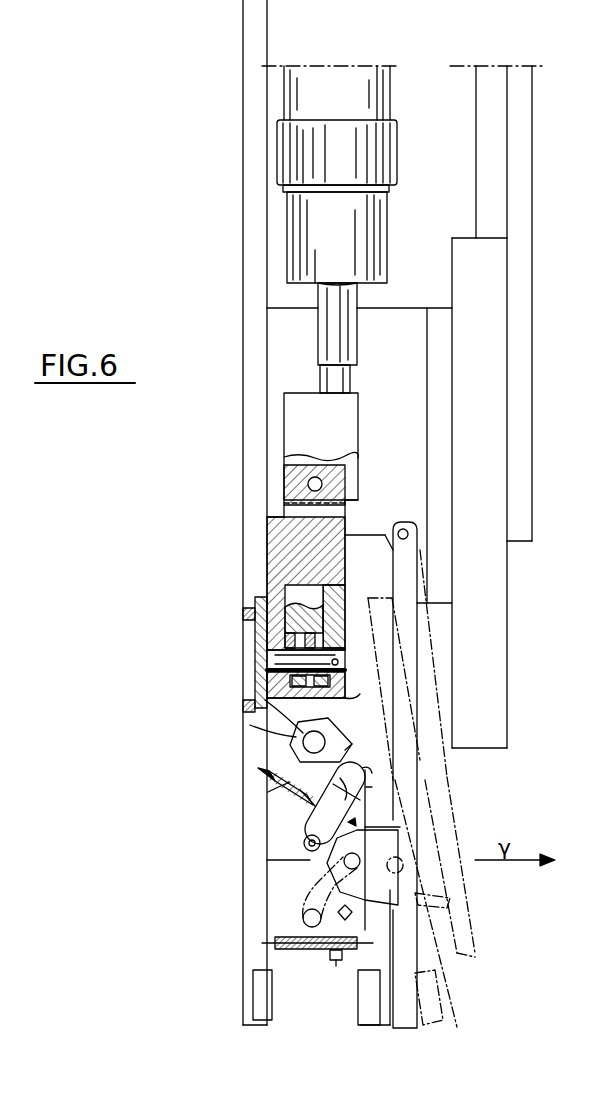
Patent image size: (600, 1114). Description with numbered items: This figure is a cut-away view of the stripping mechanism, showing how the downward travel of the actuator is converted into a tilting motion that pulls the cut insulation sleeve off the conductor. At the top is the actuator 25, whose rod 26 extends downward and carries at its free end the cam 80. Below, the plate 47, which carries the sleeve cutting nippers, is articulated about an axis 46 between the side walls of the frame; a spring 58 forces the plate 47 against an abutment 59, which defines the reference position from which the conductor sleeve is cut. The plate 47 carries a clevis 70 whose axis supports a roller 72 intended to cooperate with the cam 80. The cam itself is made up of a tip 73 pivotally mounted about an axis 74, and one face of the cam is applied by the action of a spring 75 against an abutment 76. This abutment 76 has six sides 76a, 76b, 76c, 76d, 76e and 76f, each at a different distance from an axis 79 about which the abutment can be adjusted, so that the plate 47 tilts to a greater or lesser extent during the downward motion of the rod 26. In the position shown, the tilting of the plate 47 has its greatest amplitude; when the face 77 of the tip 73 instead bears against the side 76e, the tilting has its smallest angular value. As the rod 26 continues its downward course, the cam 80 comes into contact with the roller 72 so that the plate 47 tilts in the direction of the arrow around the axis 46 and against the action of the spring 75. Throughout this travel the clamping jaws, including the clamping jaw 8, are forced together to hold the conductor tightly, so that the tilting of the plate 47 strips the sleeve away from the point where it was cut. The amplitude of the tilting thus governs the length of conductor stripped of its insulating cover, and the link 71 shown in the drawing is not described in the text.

The clamping jaw 8 is at (256, 996).
The actuator 25 is at (397, 150).
The rod 26 is at (357, 352).
The axis 46 is at (403, 528).
The plate 47 is at (403, 572).
The spring 58 is at (305, 950).
The abutment 59 is at (336, 966).
The clevis 70 is at (350, 919).
The link 71 is at (330, 892).
The roller 72 is at (335, 804).
The tip 73 is at (352, 790).
The axis 74 is at (310, 852).
The spring 75 is at (268, 792).
The abutment 76 is at (286, 745).
The side 76a is at (350, 746).
The side 76b is at (345, 715).
The side 76c is at (265, 700).
The side 76d is at (266, 768).
The side 76e is at (293, 809).
The side 76f is at (372, 774).
The face 77 is at (370, 787).
The axis 79 is at (250, 725).
The cam 80 is at (355, 820).